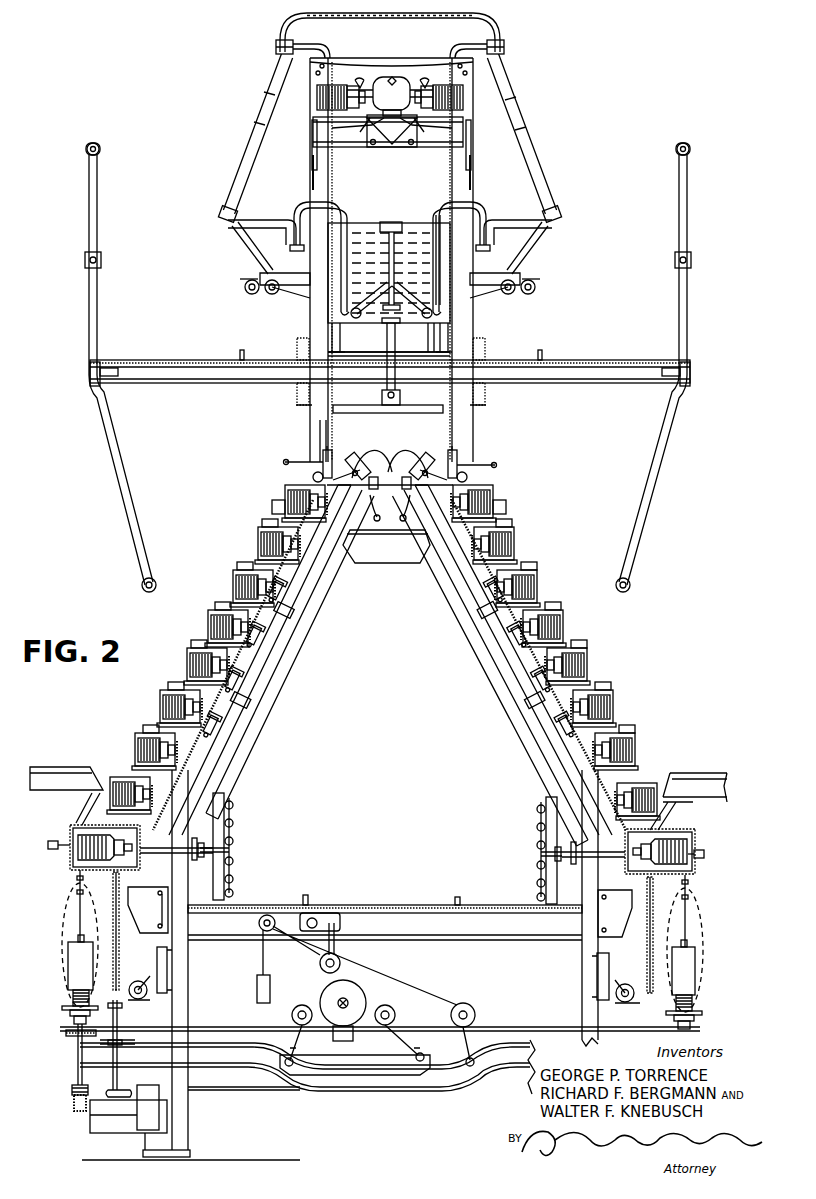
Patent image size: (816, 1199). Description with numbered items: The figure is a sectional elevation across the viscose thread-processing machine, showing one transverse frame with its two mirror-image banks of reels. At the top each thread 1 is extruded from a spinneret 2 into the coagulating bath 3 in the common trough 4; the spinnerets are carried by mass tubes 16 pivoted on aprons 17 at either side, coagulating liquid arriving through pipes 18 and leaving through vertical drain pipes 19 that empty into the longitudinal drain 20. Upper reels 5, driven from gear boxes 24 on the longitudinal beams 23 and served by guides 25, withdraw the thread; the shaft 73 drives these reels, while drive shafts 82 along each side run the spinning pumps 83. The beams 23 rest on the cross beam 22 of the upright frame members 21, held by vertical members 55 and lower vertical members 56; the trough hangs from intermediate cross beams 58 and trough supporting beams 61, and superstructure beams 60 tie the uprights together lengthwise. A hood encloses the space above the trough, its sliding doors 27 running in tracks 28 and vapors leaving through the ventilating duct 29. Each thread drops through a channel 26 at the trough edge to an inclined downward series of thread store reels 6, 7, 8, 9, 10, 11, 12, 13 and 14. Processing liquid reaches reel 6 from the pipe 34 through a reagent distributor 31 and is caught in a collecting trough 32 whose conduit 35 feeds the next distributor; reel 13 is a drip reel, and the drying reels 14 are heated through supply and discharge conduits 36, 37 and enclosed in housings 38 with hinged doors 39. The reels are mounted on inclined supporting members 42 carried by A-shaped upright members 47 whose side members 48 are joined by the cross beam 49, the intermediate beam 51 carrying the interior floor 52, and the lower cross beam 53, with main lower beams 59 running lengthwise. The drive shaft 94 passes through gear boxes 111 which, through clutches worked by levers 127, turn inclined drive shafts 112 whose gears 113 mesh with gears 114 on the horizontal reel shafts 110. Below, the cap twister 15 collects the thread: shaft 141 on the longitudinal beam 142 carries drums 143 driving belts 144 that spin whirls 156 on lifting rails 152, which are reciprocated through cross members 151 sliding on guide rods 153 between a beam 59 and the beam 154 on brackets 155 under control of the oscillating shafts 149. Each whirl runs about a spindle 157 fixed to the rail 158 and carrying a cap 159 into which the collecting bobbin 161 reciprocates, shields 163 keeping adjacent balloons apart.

The thread 1 is at (318, 160).
The spinneret 2 is at (375, 292).
The coagulating bath 3 is at (365, 222).
The coagulating trough 4 is at (436, 218).
The upper reel 5 is at (317, 97).
The first liquid processing reel 6 is at (285, 494).
The thread store reel 7 is at (258, 545).
The thread store reel 8 is at (233, 586).
The thread store reel 9 is at (208, 628).
The thread store reel 10 is at (187, 678).
The thread store reel 11 is at (160, 712).
The thread store reel 12 is at (135, 762).
The drip reel 13 is at (110, 790).
The drying reel 14 is at (90, 825).
The cap twister 15 is at (68, 946).
The mass tube 16 is at (300, 212).
The apron 17 is at (263, 225).
The supply pipe 18 is at (360, 318).
The drain pipe 19 is at (396, 220).
The drain 20 is at (387, 405).
The upright frame member 21 is at (320, 432).
The cross beam 22 is at (360, 147).
The longitudinally extending beam 23 is at (404, 147).
The gear box 24 is at (410, 99).
The guide 25 is at (332, 128).
The channel 26 is at (318, 330).
The sliding door 27 is at (262, 118).
The track 28 is at (276, 44).
The ventilating duct 29 is at (362, 18).
The reagent distributor 31 is at (237, 566).
The collecting trough 32 is at (262, 524).
The pipe 34 is at (320, 470).
The conduit 35 is at (272, 506).
The supply conduit 36 is at (232, 804).
The discharge conduit 37 is at (232, 880).
The housing 38 is at (108, 870).
The hinged door 39 is at (57, 847).
The inclined supporting member 42 is at (226, 692).
The upright member 47 is at (582, 975).
The side member 48 is at (303, 645).
The cross beam 49 is at (377, 563).
The intermediate beam 51 is at (447, 942).
The interior floor 52 is at (394, 905).
The lower cross beam 53 is at (228, 1091).
The vertical member 55 is at (313, 178).
The lower vertical member 56 is at (333, 413).
The intermediate cross beam 58 is at (352, 360).
The main lower beam 59 is at (167, 967).
The superstructure beam 60 is at (297, 393).
The trough supporting beam 61 is at (430, 345).
The shaft 73 is at (392, 77).
The drive shaft 82 is at (268, 295).
The spinning pump 83 is at (258, 272).
The drive shaft 94 is at (380, 452).
The reel drive shaft 110 is at (290, 592).
The gear box 111 is at (357, 452).
The inclined drive shaft 112 is at (222, 752).
The gear 113 is at (266, 625).
The gear 114 is at (245, 683).
The lever 127 is at (285, 462).
The shaft 141 is at (338, 998).
The longitudinal beam 142 is at (385, 1060).
The drum 143 is at (358, 987).
The belt 144 is at (232, 1027).
The shaft 149 is at (138, 980).
The cross member 151 is at (418, 1092).
The lifting rail 152 is at (66, 1036).
The guide rod 153 is at (113, 1067).
The beam 154 is at (112, 1092).
The bracket 155 is at (96, 1132).
The whirl 156 is at (74, 1016).
The spindle 157 is at (72, 1090).
The fixed rail 158 is at (74, 1106).
The cap 159 is at (78, 963).
The collecting bobbin 161 is at (73, 998).
The shield 163 is at (75, 888).